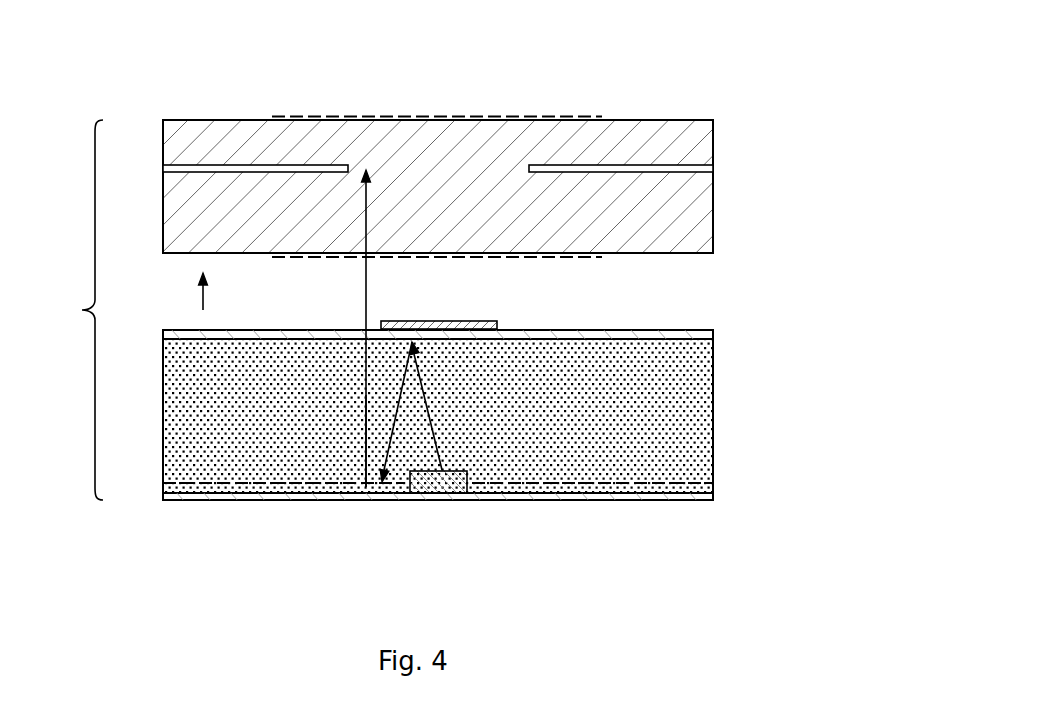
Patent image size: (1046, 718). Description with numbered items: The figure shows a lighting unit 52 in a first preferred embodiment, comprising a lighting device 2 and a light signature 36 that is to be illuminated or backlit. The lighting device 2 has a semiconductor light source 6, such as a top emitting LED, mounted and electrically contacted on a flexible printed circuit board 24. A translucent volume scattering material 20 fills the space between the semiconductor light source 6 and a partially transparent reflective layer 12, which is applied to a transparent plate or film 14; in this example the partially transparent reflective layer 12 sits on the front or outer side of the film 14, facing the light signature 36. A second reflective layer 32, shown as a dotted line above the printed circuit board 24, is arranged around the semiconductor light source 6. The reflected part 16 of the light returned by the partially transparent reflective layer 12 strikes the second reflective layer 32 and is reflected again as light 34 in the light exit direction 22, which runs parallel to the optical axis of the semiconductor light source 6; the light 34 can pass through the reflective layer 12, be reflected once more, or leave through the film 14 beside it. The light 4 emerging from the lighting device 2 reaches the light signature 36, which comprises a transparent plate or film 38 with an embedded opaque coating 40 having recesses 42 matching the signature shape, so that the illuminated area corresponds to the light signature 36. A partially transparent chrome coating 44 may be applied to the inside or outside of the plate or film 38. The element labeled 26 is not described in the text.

The lighting device 2 is at (763, 289).
The light 4 is at (364, 302).
The semiconductor light source 6 is at (465, 467).
The partially transparent reflective layer 12 is at (516, 305).
The transparent plate or film 14 is at (680, 340).
The reflected part of the light 16 is at (387, 427).
The translucent volume scattering material 20 is at (617, 415).
The light exit direction 22 is at (203, 300).
The printed circuit board 24 is at (623, 500).
The emitted light 26 is at (430, 427).
The second reflective layer 32 is at (552, 490).
The light 34 is at (365, 395).
The light signature 36 is at (708, 60).
The transparent plate or film 38 is at (672, 153).
The opaque coating 40 is at (678, 172).
The recesses 42 is at (453, 160).
The partially transparent chrome coating 44 is at (375, 113).
The lighting unit 52 is at (76, 310).